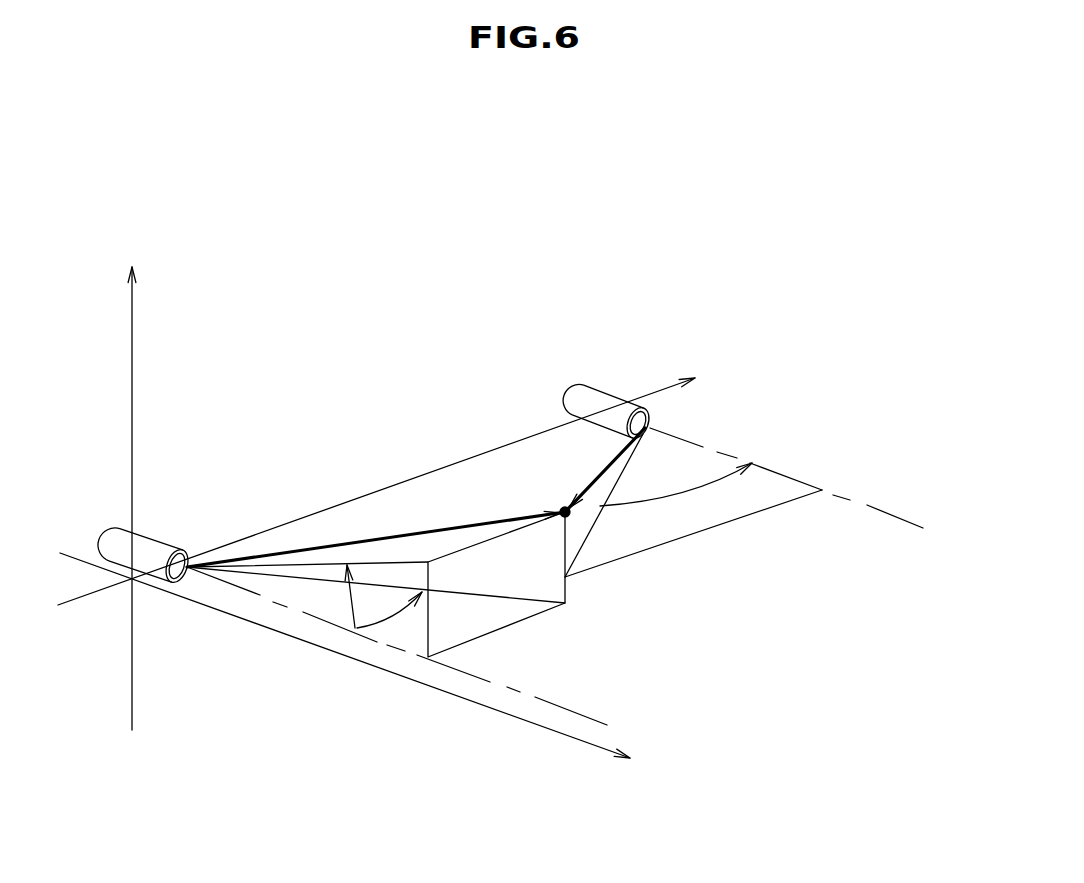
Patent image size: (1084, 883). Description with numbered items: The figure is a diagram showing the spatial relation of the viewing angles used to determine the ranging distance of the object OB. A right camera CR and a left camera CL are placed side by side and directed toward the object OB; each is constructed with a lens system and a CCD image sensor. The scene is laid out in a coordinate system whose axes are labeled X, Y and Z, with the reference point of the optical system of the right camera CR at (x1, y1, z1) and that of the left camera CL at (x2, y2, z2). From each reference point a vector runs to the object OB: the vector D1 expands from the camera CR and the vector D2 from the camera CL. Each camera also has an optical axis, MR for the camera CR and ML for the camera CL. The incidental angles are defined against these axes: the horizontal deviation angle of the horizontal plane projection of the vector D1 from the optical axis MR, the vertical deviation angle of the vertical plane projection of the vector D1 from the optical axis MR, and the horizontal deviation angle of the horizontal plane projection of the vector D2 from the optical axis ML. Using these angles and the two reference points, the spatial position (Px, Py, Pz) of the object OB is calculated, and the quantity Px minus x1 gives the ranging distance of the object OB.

The right camera CR is at (199, 548).
The left camera CL is at (665, 418).
The optical axis of the camera CR MR is at (570, 708).
The optical axis of the camera CL ML is at (867, 505).
The vector D1 is at (342, 546).
The vector D2 is at (603, 472).
The object OB is at (575, 515).
The X axis X is at (345, 668).
The Y axis Y is at (376, 477).
The Z axis Z is at (124, 498).